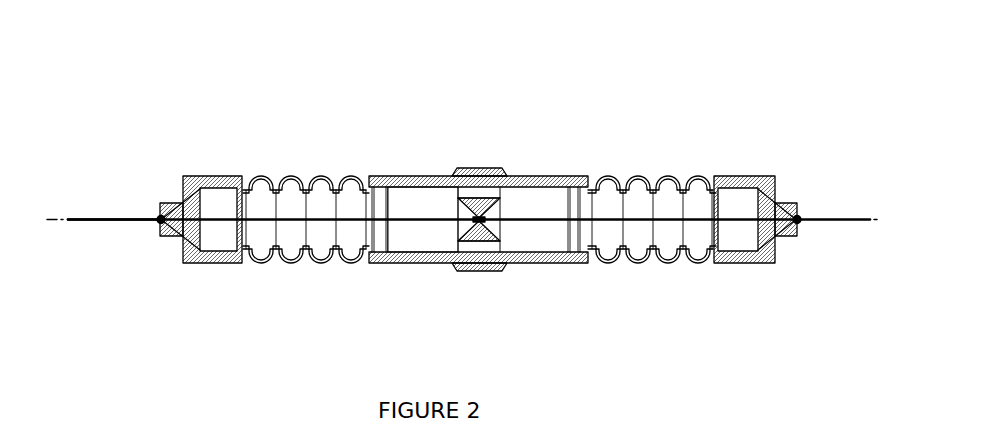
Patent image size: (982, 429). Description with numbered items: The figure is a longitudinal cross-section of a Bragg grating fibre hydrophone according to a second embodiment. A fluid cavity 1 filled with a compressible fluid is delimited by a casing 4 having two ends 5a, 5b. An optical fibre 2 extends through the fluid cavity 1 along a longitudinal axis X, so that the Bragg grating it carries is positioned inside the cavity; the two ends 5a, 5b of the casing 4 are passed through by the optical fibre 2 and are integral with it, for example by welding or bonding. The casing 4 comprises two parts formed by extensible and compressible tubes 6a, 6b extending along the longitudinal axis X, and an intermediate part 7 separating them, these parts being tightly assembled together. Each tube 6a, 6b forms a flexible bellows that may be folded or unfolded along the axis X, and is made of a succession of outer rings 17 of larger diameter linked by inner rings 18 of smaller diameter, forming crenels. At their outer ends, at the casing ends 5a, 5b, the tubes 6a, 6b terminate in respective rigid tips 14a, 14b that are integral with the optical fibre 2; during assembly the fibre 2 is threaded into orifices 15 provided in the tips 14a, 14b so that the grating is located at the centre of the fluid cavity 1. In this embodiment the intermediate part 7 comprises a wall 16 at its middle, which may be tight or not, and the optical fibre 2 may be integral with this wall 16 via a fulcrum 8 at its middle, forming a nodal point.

The fluid cavity 1 is at (417, 241).
The optical fibre 2 is at (122, 221).
The casing 4 is at (473, 140).
The casing end 5a is at (151, 206).
The casing end 5b is at (814, 201).
The extensible and compressible tube 6a is at (318, 177).
The extensible and compressible tube 6b is at (666, 211).
The intermediate part 7 is at (432, 176).
The fulcrum 8 is at (478, 235).
The tip 14a is at (207, 259).
The tip 14b is at (775, 187).
The orifice 15 is at (173, 237).
The wall 16 is at (482, 202).
The outer ring 17 is at (606, 178).
The inner ring 18 is at (652, 262).
The longitudinal axis X is at (868, 221).